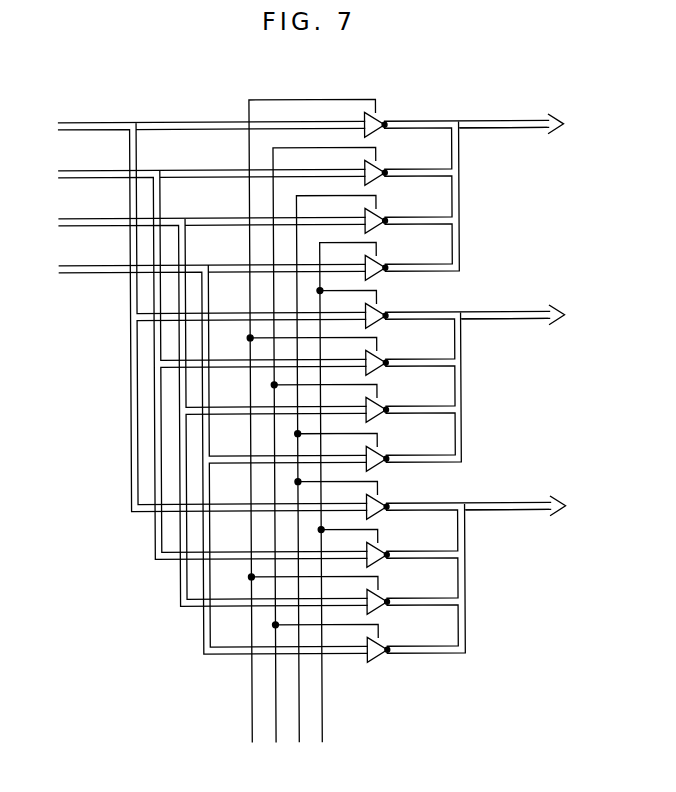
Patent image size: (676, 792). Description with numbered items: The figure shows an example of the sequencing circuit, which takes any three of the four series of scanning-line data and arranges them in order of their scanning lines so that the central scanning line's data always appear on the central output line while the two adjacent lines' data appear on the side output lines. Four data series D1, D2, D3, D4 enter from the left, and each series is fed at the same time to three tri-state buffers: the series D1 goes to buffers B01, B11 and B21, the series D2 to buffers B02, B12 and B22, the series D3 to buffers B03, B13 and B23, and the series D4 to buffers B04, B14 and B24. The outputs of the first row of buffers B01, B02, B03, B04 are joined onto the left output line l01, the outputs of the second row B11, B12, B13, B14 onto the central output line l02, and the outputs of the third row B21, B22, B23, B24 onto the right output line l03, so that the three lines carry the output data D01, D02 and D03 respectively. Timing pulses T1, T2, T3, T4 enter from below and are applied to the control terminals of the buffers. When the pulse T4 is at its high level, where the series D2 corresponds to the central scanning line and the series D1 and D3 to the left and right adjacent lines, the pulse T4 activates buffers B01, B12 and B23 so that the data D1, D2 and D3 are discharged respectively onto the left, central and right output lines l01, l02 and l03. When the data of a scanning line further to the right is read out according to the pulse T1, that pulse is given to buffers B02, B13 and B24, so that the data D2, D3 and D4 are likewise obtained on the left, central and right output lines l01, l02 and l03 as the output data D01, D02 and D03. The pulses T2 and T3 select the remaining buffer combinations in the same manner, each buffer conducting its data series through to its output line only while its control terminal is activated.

The data series D1 is at (196, 310).
The data series D2 is at (197, 358).
The data series D3 is at (197, 406).
The data series D4 is at (197, 453).
The timing pulse T1 is at (323, 459).
The timing pulse T2 is at (334, 483).
The timing pulse T3 is at (346, 507).
The timing pulse T4 is at (310, 435).
The tri-state buffer B01 is at (383, 116).
The tri-state buffer B02 is at (383, 166).
The tri-state buffer B03 is at (383, 215).
The tri-state buffer B04 is at (383, 262).
The tri-state buffer B11 is at (383, 310).
The tri-state buffer B12 is at (383, 358).
The tri-state buffer B13 is at (383, 405).
The tri-state buffer B14 is at (383, 453).
The tri-state buffer B21 is at (383, 501).
The tri-state buffer B22 is at (383, 550).
The tri-state buffer B23 is at (383, 597).
The tri-state buffer B24 is at (383, 645).
The output data D01 is at (496, 190).
The output data D02 is at (497, 381).
The output data D03 is at (498, 572).
The left output line l01 is at (490, 129).
The central output line l02 is at (489, 320).
The right output line l03 is at (493, 511).